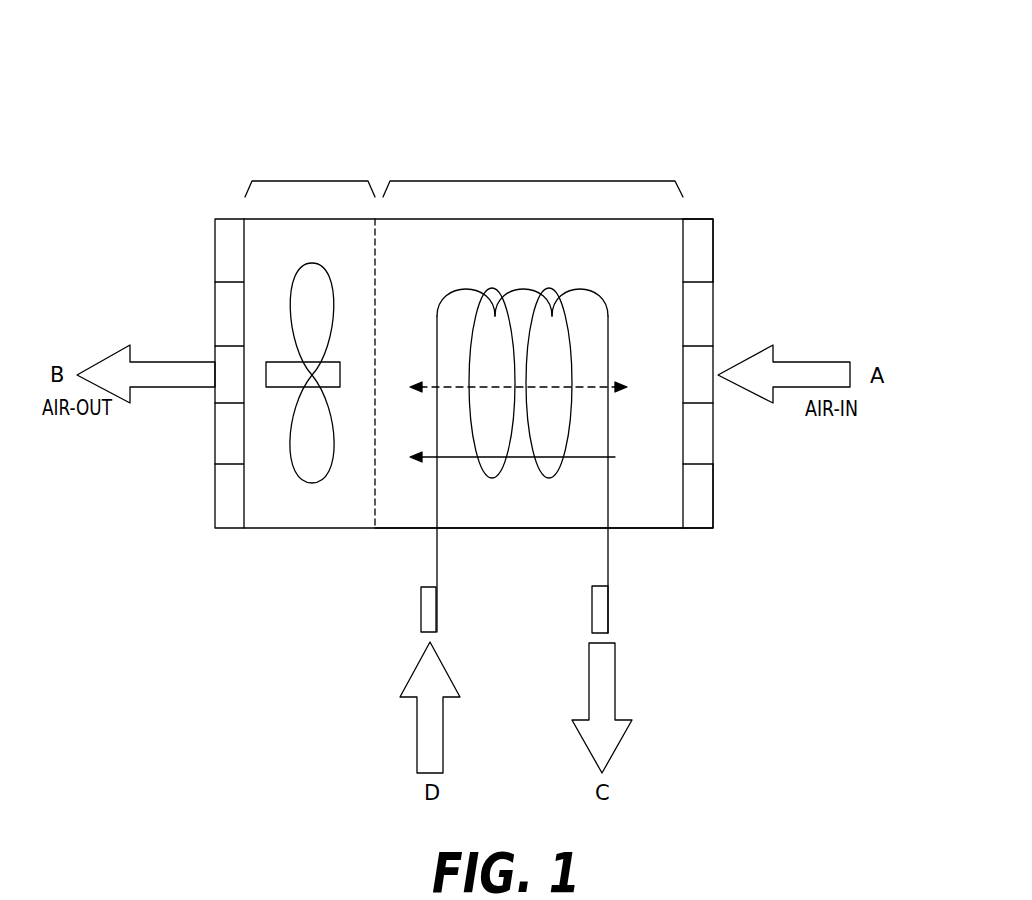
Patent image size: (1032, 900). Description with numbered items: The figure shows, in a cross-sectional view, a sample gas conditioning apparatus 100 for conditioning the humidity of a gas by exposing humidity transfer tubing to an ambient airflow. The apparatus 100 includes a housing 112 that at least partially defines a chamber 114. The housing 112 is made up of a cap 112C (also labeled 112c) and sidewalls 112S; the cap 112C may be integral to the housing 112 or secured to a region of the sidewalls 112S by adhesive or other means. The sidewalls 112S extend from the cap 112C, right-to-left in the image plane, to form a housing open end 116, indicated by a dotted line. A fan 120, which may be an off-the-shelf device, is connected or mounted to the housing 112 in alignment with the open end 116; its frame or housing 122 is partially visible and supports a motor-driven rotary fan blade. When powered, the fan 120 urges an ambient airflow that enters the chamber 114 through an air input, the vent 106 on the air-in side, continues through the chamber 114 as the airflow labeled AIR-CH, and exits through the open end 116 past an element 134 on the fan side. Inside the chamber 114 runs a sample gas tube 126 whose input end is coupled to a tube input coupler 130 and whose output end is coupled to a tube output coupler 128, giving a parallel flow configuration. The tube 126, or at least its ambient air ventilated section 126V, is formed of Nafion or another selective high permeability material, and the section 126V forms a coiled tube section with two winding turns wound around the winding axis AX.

The sample gas conditioning apparatus 100 is at (764, 67).
The vent 106 is at (704, 384).
The housing 112 is at (534, 181).
The cap 112c is at (707, 219).
The sidewalls 112S is at (657, 528).
The cap 112C is at (705, 528).
The chamber 114 is at (665, 237).
The housing open end 116 is at (374, 253).
The fan 120 is at (313, 485).
The fan frame or housing 122 is at (313, 181).
The sample gas tube 126 is at (608, 505).
The ambient air ventilated section 126V is at (524, 288).
The tube output coupler 128 is at (608, 612).
The tube input coupler 130 is at (421, 612).
The air outlet 134 is at (215, 272).
The winding axis AX is at (565, 384).
The ambient airflow through the chamber AIR-CH is at (488, 478).